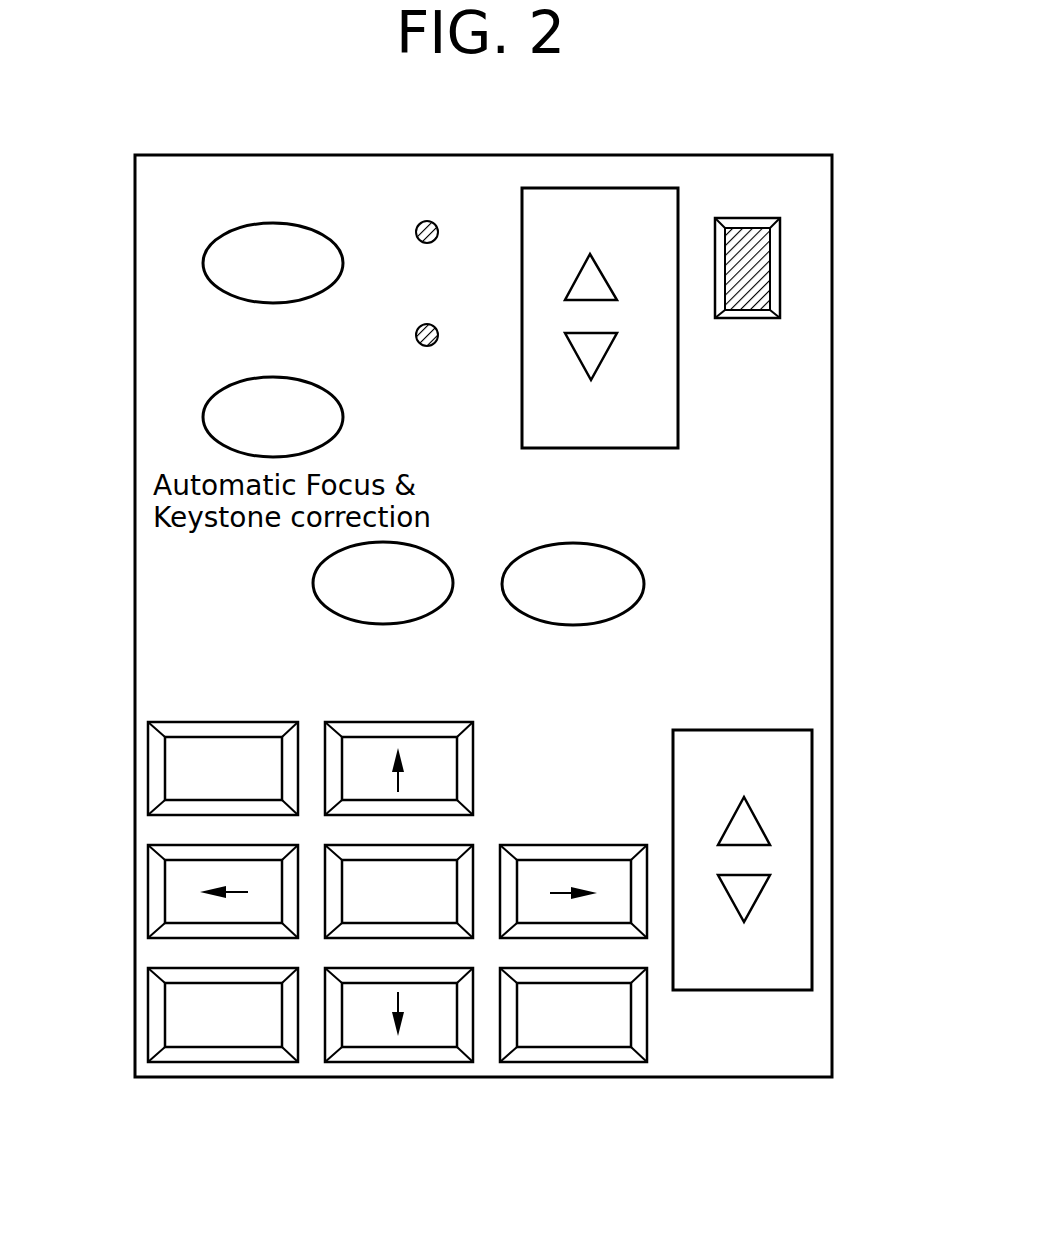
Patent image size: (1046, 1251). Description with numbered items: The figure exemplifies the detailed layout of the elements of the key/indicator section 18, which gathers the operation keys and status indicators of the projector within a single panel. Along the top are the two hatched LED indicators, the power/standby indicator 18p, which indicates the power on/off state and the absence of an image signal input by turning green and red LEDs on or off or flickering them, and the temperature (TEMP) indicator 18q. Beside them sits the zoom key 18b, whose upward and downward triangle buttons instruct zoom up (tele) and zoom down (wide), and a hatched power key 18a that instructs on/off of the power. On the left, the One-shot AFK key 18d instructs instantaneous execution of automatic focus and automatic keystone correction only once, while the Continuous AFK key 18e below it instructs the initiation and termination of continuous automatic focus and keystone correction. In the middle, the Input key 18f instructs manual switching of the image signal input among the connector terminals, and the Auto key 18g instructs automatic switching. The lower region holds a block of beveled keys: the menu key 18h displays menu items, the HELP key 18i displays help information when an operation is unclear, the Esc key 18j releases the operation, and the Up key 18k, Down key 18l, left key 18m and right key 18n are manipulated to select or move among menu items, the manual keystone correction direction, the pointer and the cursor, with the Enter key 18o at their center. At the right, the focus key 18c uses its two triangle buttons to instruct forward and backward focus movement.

The key/indicator section 18 is at (845, 226).
The power key 18a is at (752, 216).
The zoom key 18b is at (679, 422).
The focus key 18c is at (773, 730).
The One-shot AFK key 18d is at (203, 260).
The Continuous AFK key 18e is at (203, 415).
The Input key 18f is at (314, 584).
The Auto key 18g is at (646, 582).
The menu key 18h is at (246, 748).
The HELP key 18i is at (245, 1036).
The Esc key 18j is at (608, 1036).
The Up key 18k is at (431, 750).
The Down key 18l is at (425, 1036).
The left key 18m is at (178, 897).
The right key 18n is at (610, 875).
The Enter key 18o is at (435, 876).
The power/standby indicator 18p is at (436, 223).
The temperature (TEMP) indicator 18q is at (439, 334).